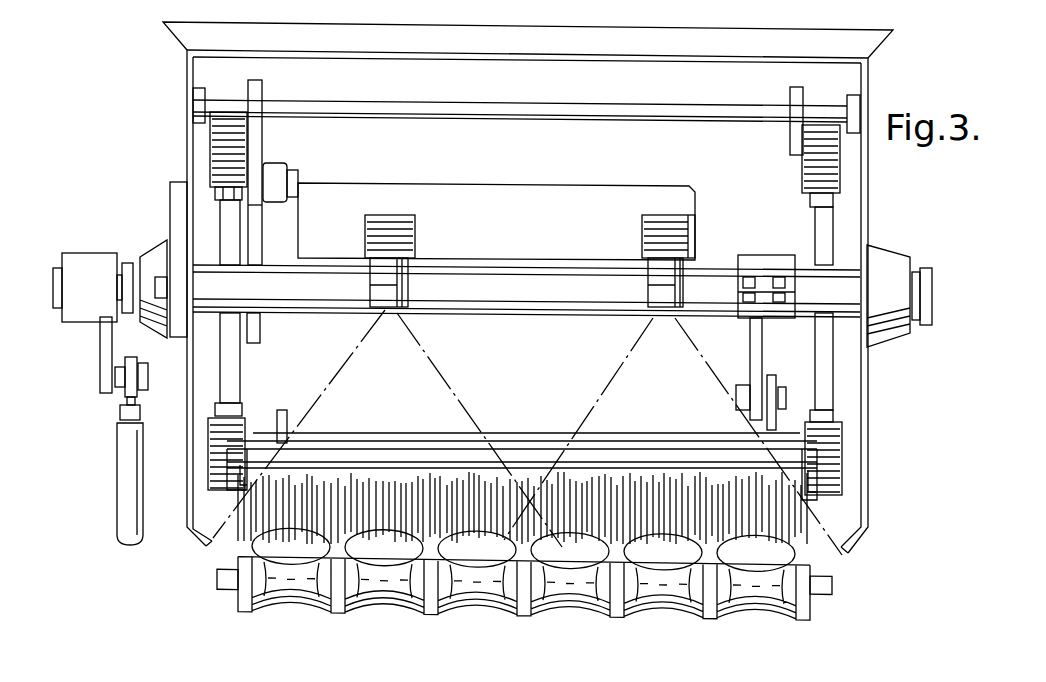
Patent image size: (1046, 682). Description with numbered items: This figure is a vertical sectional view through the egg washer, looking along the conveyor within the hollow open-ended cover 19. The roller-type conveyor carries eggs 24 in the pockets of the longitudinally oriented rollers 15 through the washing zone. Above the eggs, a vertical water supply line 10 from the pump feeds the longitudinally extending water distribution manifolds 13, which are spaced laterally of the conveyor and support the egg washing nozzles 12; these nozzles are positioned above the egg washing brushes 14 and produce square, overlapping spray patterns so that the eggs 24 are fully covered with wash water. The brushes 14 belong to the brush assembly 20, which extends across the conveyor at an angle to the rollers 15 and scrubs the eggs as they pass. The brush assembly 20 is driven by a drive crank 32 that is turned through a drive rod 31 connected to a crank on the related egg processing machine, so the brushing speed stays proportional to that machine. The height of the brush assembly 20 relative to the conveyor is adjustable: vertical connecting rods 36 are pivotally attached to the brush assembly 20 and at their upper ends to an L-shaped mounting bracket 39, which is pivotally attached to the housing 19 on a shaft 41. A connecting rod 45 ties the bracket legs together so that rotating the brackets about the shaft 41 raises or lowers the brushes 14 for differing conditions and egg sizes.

The supply line 10 is at (512, 231).
The egg washing nozzles 12 is at (382, 287).
The manifolds 13 is at (390, 225).
The egg washing brushes 14 is at (624, 500).
The pocketed rollers 15 is at (528, 605).
The cover 19 is at (869, 212).
The brush assembly 20 is at (541, 421).
The eggs 24 is at (763, 558).
The drive rod 31 is at (125, 467).
The drive crank 32 is at (437, 298).
The vertical connecting rods 36 is at (234, 377).
The L-shaped mounting bracket 39 is at (250, 128).
The shaft 41 is at (512, 120).
The connecting rod 45 is at (279, 170).